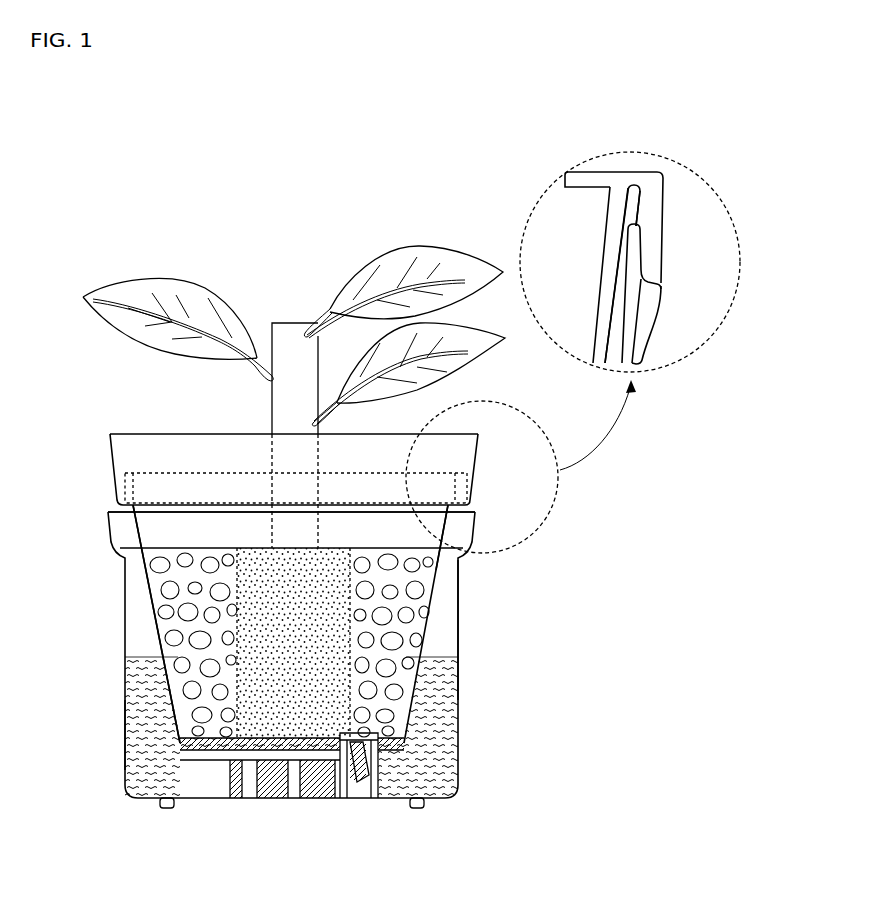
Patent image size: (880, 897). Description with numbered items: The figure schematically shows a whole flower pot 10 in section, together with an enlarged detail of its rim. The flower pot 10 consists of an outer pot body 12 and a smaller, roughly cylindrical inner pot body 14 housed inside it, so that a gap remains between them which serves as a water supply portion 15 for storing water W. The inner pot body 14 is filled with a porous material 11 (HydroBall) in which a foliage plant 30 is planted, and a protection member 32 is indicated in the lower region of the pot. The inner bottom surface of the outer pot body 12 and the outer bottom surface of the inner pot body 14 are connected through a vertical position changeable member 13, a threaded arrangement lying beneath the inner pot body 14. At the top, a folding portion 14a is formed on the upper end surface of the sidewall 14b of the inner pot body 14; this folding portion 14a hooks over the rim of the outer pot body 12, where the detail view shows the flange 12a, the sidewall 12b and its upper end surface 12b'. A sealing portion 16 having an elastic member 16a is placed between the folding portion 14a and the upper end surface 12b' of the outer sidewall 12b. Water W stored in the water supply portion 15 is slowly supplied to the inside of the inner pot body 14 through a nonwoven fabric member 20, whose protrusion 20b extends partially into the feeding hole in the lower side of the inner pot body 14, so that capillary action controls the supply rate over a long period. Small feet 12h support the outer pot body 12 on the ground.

The flower pot 10 is at (719, 62).
The porous material 11 is at (445, 683).
The outer pot body 12 is at (459, 600).
The flange 12a is at (660, 303).
The sidewall 12b is at (519, 630).
The upper end surface 12b' is at (480, 366).
The leg of outer pot 12h is at (425, 810).
The vertical position changeable member 13 is at (267, 804).
The inner pot body 14 is at (112, 462).
The folding portion 14a is at (654, 170).
The sidewall 14b is at (127, 605).
The water supply portion 15 is at (455, 572).
The sealing portion 16 is at (640, 226).
The elastic member 16a is at (640, 189).
The nonwoven fabric member 20 is at (365, 808).
The protrusion 20b is at (365, 808).
The foliage plant 30 is at (402, 253).
The protection member 32 is at (125, 735).
The water W is at (460, 770).